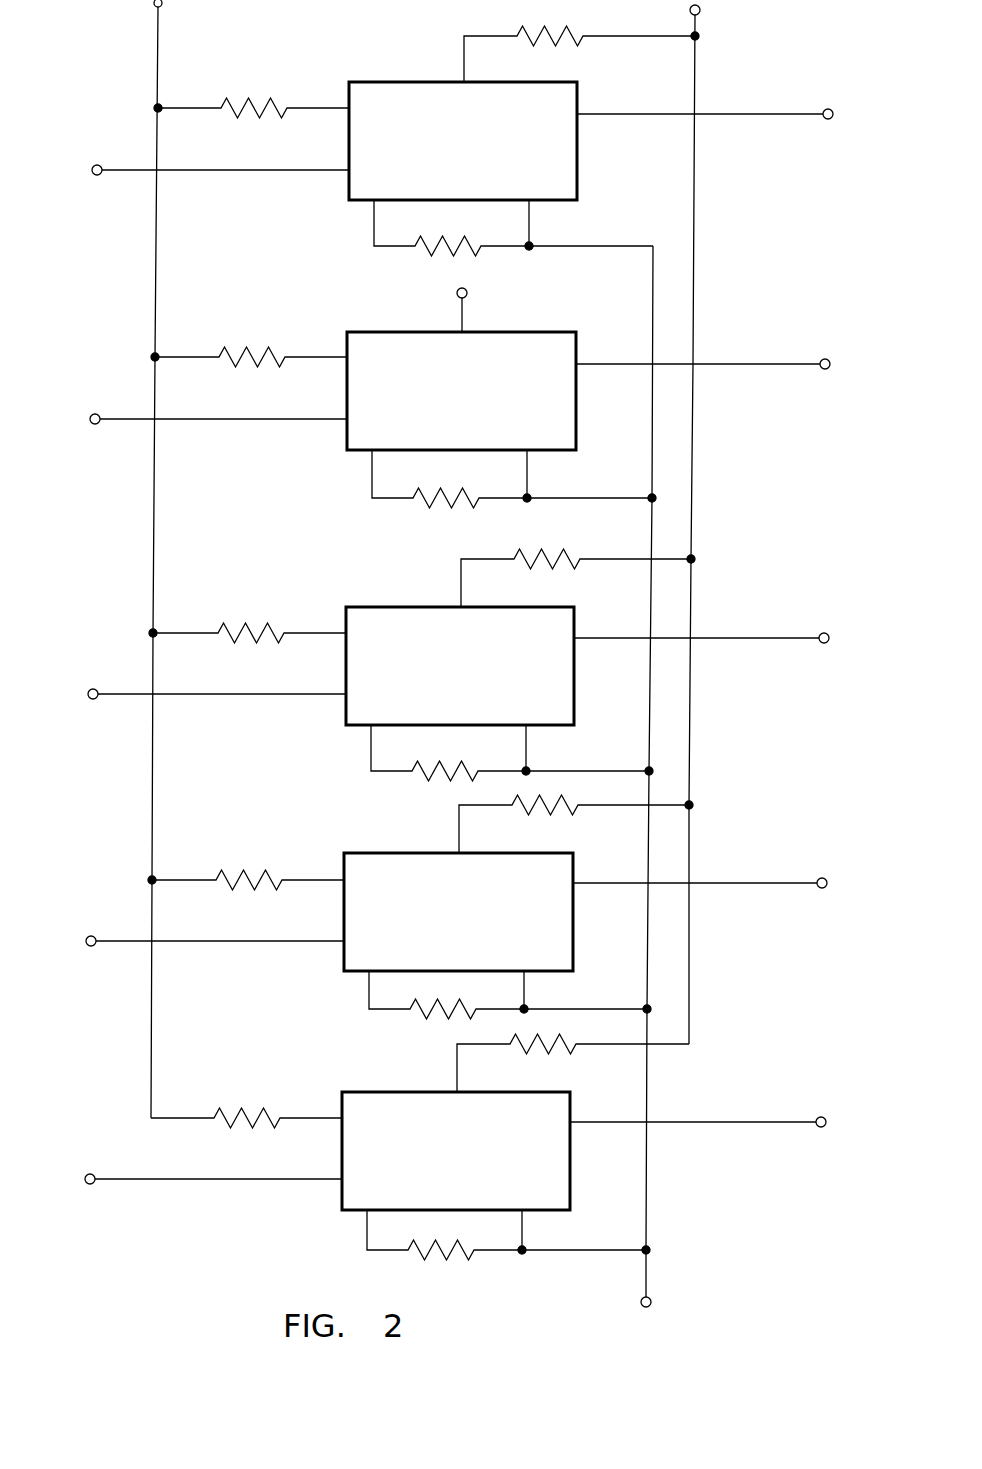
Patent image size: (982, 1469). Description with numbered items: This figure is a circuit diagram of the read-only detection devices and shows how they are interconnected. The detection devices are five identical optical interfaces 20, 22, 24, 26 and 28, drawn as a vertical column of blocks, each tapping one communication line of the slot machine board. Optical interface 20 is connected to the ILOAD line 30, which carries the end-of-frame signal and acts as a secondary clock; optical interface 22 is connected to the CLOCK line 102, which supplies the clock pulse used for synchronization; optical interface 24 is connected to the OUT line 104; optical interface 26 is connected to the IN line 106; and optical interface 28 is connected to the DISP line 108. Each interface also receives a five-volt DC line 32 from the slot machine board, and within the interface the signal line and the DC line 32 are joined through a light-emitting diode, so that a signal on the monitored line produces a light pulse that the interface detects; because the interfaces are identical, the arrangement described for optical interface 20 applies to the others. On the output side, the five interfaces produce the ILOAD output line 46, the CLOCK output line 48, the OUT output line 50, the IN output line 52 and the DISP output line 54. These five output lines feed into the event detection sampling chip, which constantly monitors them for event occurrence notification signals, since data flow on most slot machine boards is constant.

The optical interface 20 is at (393, 93).
The optical interface 22 is at (373, 343).
The optical interface 24 is at (392, 620).
The optical interface 26 is at (380, 873).
The optical interface 28 is at (373, 1102).
The ILOAD line 30 is at (123, 170).
The +5 volt DC line 32 is at (210, 108).
The ILOAD output line 46 is at (750, 115).
The CLOCK output line 48 is at (763, 364).
The OUT output line 50 is at (763, 638).
The IN output line 52 is at (755, 885).
The DISP output line 54 is at (752, 1122).
The CLOCK line 102 is at (118, 419).
The OUT line 104 is at (118, 694).
The IN line 106 is at (118, 941).
The DISP line 108 is at (123, 1179).